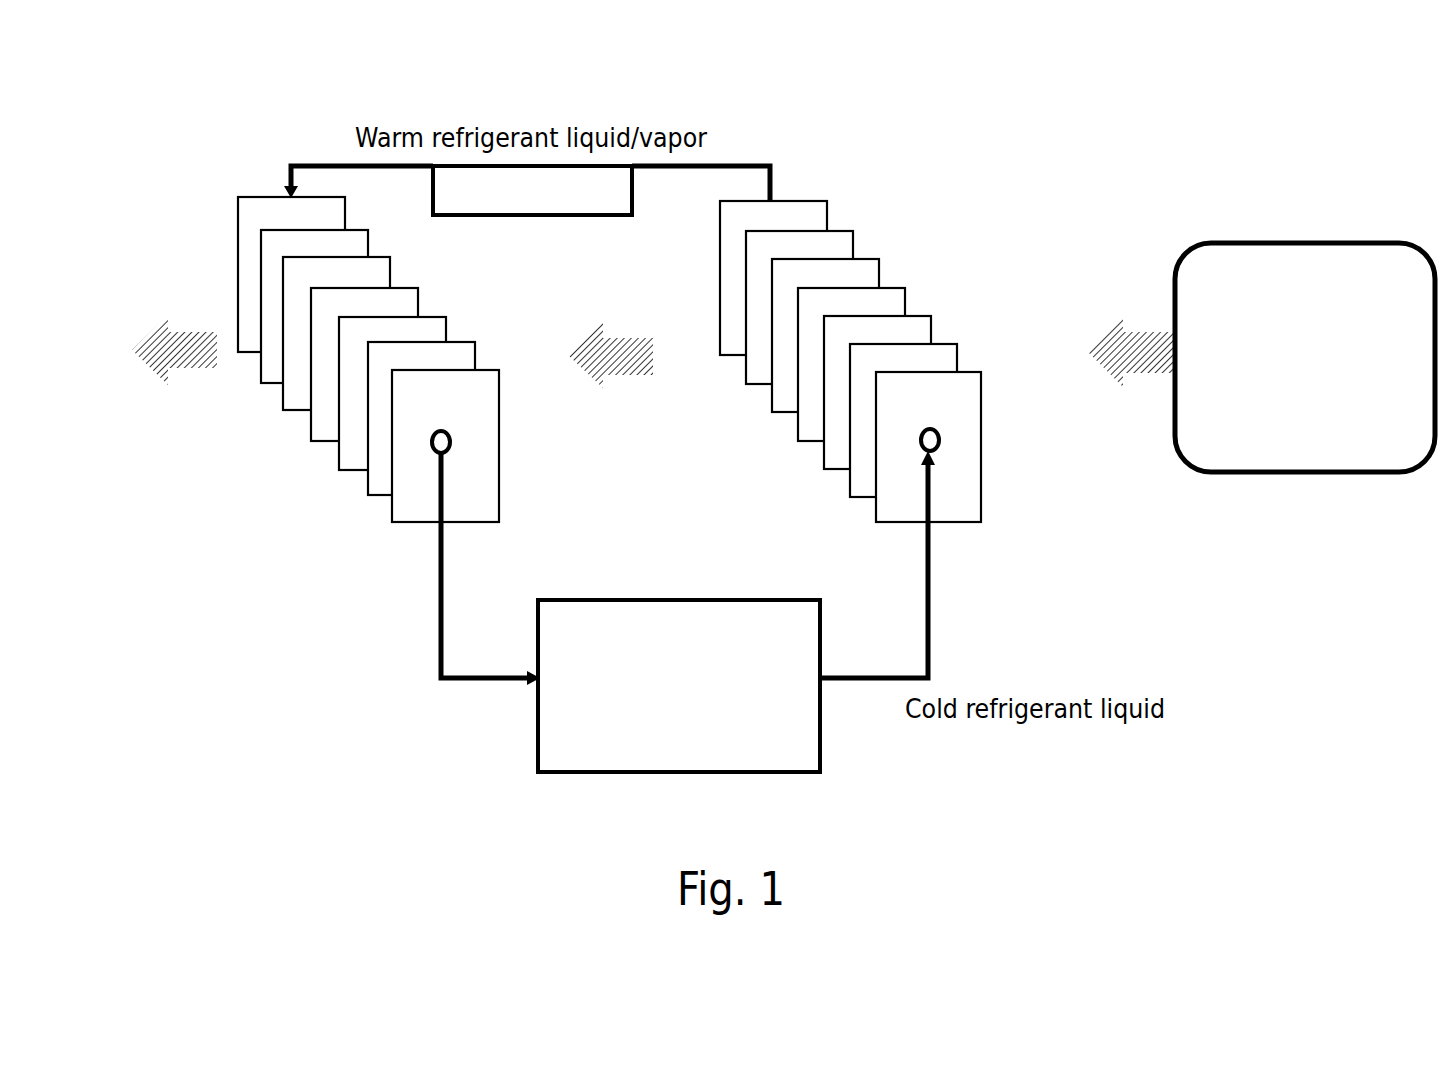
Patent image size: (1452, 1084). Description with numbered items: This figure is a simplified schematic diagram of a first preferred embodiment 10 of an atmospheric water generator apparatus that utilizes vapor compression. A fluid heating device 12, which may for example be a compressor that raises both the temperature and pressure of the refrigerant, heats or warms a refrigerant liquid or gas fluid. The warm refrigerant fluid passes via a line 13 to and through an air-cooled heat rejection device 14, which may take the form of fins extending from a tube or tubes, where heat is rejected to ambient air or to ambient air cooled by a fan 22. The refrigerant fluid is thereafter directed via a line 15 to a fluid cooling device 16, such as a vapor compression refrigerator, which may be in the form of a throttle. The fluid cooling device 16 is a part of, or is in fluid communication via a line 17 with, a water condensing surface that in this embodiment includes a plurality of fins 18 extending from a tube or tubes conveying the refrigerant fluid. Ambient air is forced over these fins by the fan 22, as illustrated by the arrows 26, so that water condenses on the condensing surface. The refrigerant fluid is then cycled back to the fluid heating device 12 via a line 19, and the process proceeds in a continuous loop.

The first preferred embodiment 10 is at (1067, 585).
The fluid heating device 12 is at (541, 195).
The line 13 is at (330, 162).
The air-cooled heat rejection device 14 is at (273, 370).
The line 15 is at (438, 615).
The fluid cooling device 16 is at (553, 730).
The line 17 is at (935, 603).
The fins 18 is at (893, 317).
The line 19 is at (743, 162).
The fan 22 is at (1288, 442).
The arrows 26 is at (589, 343).